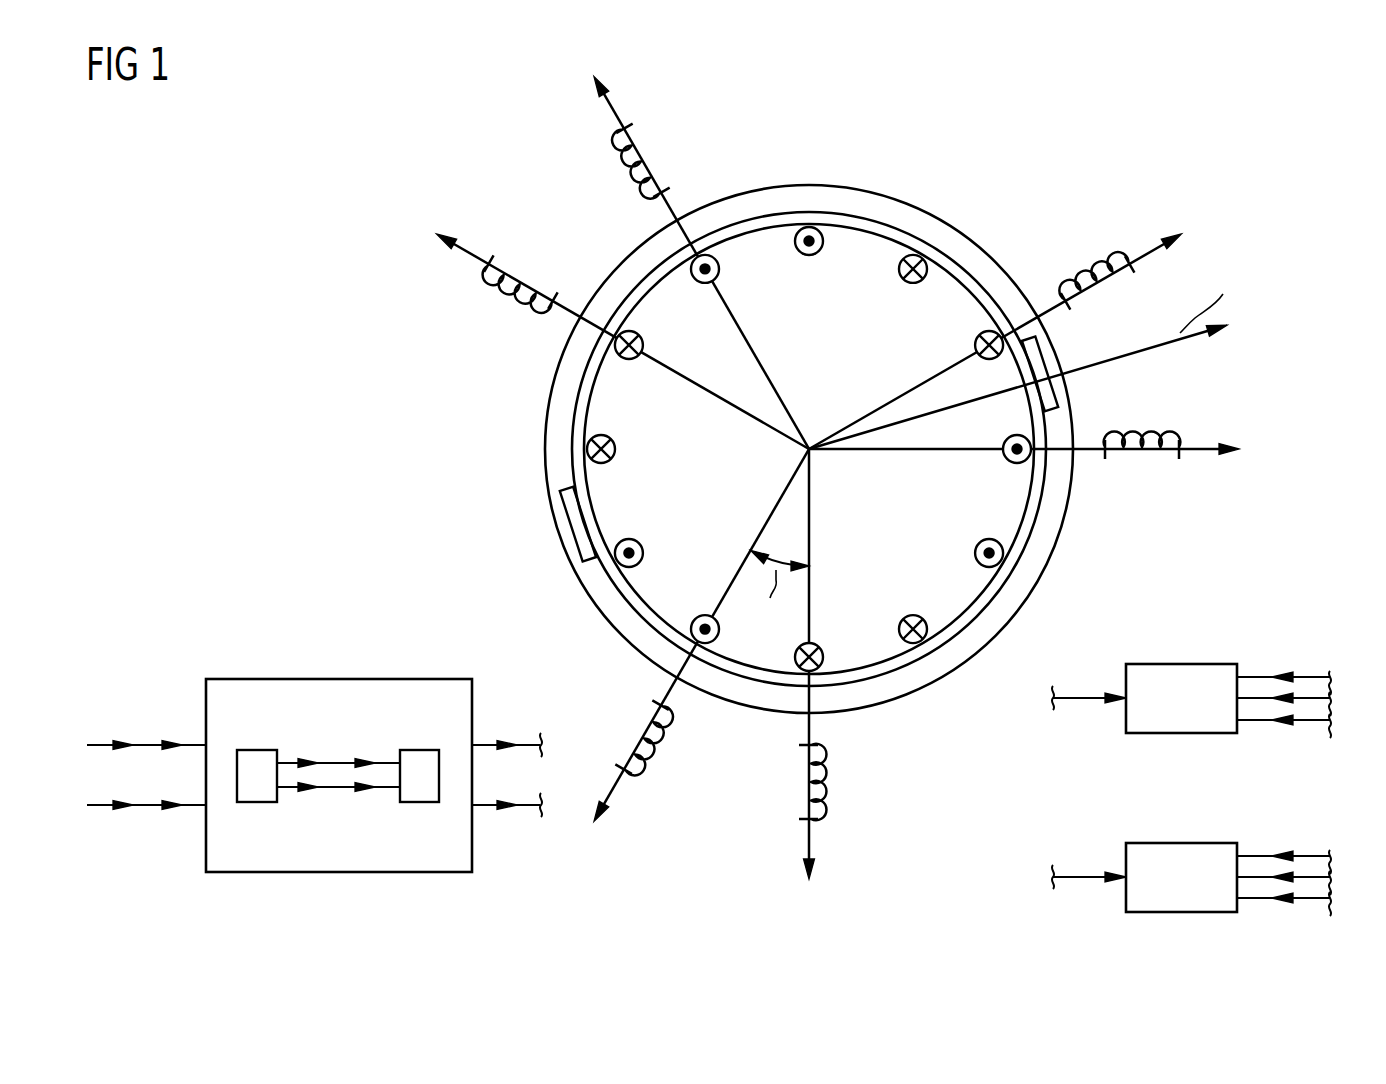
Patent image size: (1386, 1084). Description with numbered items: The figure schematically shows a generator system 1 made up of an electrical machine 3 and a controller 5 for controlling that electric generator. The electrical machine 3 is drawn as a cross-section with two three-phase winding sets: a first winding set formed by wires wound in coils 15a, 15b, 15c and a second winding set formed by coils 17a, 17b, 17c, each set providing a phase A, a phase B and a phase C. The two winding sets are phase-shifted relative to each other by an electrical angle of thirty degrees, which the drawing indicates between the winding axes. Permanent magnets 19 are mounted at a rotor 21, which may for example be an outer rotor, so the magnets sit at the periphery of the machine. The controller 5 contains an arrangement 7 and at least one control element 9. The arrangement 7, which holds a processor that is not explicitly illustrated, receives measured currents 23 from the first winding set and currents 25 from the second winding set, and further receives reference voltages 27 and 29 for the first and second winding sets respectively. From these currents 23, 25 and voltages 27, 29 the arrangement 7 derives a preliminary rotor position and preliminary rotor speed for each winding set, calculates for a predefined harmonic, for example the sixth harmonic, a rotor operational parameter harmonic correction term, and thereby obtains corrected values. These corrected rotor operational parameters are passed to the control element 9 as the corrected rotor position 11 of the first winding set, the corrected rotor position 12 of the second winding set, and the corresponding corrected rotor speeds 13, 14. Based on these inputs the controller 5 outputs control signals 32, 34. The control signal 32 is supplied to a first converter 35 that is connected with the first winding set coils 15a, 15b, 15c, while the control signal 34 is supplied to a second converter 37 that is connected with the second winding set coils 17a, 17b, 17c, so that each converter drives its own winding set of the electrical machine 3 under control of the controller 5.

The generator system 1 is at (1118, 155).
The electrical machine 3 is at (878, 155).
The controller 5 is at (337, 679).
The arrangement 7 is at (257, 750).
The control element 9 is at (420, 750).
The corrected rotor position of the first winding set 11 is at (318, 762).
The corrected rotor position of the second winding set 12 is at (375, 762).
The corrected rotor speed of the first winding set 13 is at (318, 788).
The corrected rotor speed of the second winding set 14 is at (375, 788).
The coil of the first winding set 15a is at (1200, 449).
The coil of the first winding set 15b is at (612, 113).
The coil of the first winding set 15c is at (617, 790).
The coil of the second winding set 17a is at (1147, 257).
The coil of the second winding set 17b is at (472, 258).
The coil of the second winding set 17c is at (812, 842).
The permanent magnets 19 is at (1060, 395).
The rotor 21 is at (1047, 565).
The currents 23 is at (133, 744).
The currents 25 is at (182, 744).
The reference voltages 27 is at (133, 806).
The reference voltages 29 is at (182, 806).
The control signal 32 is at (517, 744).
The control signal 34 is at (517, 806).
The first converter 35 is at (1180, 664).
The second converter 37 is at (1180, 843).